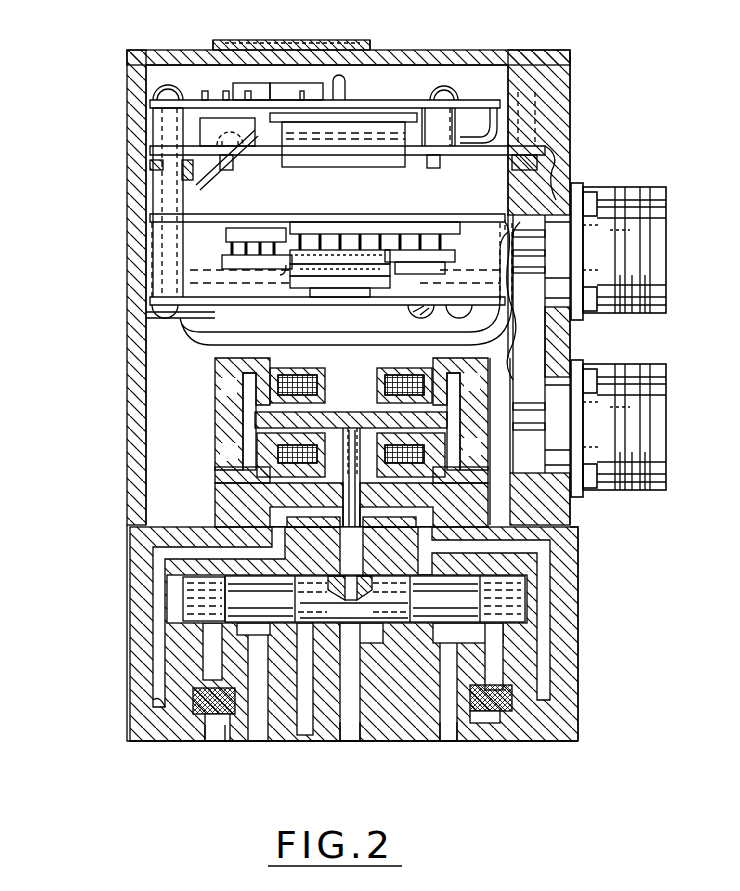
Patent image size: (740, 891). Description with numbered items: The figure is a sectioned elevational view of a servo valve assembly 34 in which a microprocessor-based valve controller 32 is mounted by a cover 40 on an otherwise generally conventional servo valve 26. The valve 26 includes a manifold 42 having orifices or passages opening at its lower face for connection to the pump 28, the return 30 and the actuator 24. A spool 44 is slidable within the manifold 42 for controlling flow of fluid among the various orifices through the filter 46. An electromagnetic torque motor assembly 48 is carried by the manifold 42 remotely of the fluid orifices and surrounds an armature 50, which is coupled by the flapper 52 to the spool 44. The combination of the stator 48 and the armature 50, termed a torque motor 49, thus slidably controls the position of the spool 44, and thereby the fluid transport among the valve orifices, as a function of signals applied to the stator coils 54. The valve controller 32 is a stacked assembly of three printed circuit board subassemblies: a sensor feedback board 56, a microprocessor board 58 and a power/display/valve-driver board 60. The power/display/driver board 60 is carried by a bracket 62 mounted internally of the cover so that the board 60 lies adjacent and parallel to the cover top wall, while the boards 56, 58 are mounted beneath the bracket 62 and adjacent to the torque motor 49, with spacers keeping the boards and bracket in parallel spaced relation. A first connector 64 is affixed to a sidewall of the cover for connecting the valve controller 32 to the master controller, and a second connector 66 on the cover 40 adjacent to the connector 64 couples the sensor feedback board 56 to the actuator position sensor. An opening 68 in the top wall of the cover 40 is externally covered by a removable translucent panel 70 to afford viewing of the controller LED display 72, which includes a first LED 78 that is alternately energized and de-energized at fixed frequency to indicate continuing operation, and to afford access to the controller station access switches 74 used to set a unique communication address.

The actuator 24 is at (261, 741).
The servo valve 26 is at (128, 636).
The pump 28 is at (214, 741).
The return 30 is at (353, 741).
The valve controller 32 is at (150, 306).
The servo valve assembly 34 is at (576, 114).
The cover 40 is at (450, 50).
The manifold 42 is at (579, 626).
The spool 44 is at (512, 592).
The filter 46 is at (532, 732).
The electromagnetic torque motor assembly 48 is at (232, 476).
The torque motor 49 is at (214, 452).
The armature 50 is at (256, 420).
The flapper 52 is at (343, 493).
The stator coils 54 is at (278, 390).
The sensor feedback board 56 is at (215, 311).
The microprocessor board 58 is at (207, 228).
The power/display/valve-driver board 60 is at (150, 112).
The bracket 62 is at (267, 153).
The first connector 64 is at (614, 195).
The second connector 66 is at (614, 373).
The opening 68 is at (352, 44).
The translucent panel 70 is at (243, 46).
The LED display 72 is at (330, 80).
The station access switches 74 is at (248, 86).
The first LED 78 is at (348, 87).